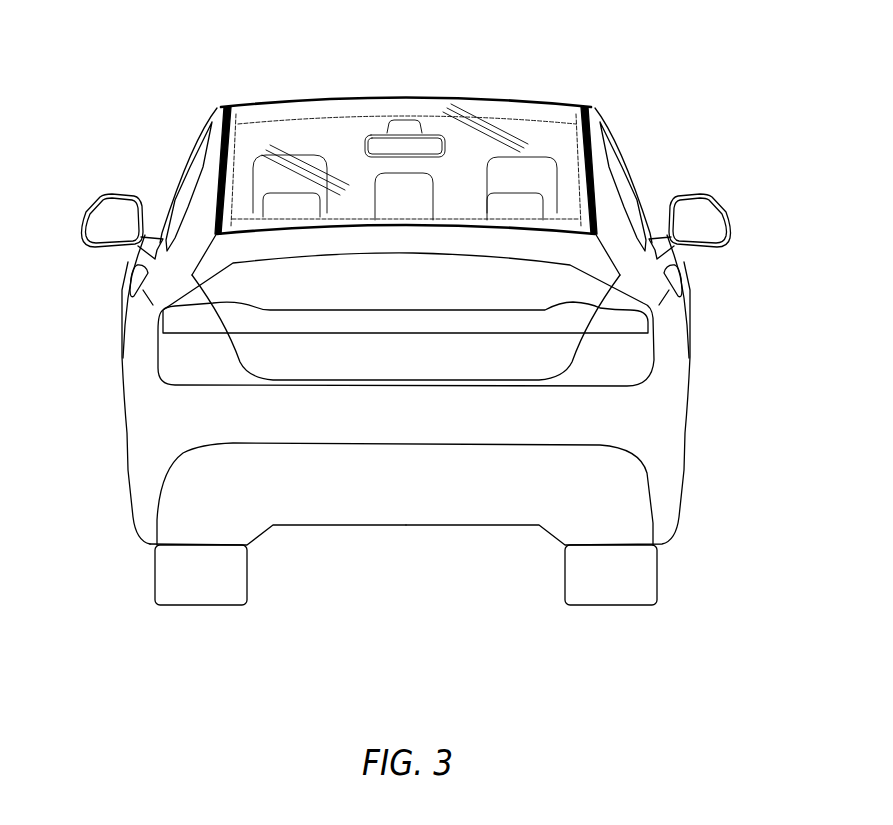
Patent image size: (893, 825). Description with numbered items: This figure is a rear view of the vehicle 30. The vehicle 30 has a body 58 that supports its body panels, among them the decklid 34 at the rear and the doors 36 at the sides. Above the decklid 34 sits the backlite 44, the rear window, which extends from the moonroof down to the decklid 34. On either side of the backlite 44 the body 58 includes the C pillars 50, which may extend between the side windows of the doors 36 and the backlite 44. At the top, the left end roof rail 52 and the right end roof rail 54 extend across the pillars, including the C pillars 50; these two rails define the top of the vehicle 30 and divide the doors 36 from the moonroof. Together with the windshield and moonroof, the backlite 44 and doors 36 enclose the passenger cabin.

The vehicle 30 is at (697, 67).
The decklid 34 is at (545, 285).
The doors 36 is at (123, 297).
The backlite 44 is at (333, 137).
The C pillars 50 is at (200, 200).
The left end roof rail 52 is at (223, 106).
The right end roof rail 54 is at (590, 106).
The body 58 is at (143, 368).